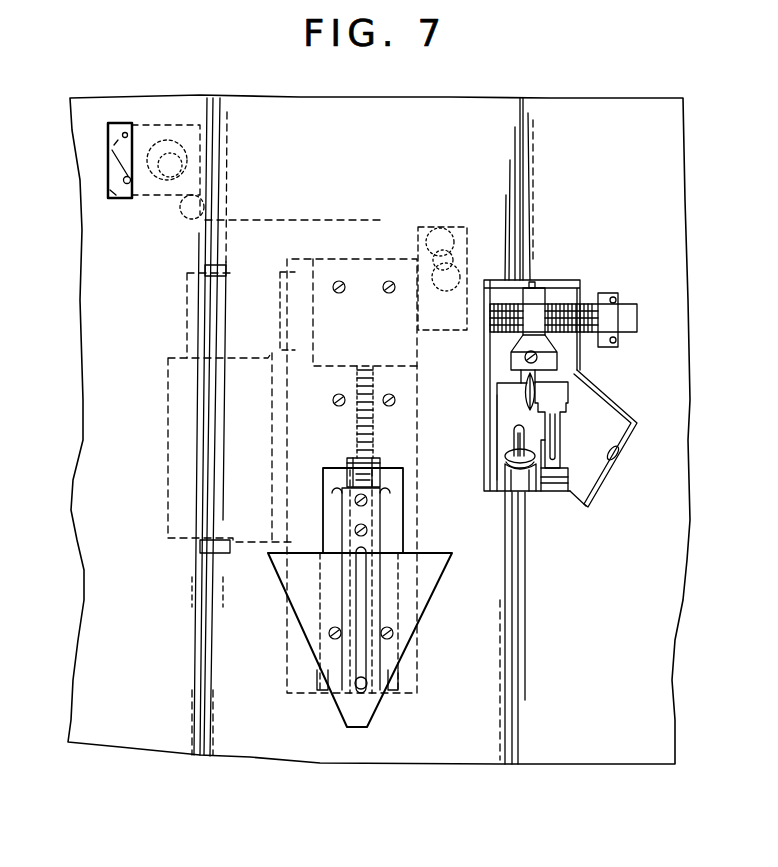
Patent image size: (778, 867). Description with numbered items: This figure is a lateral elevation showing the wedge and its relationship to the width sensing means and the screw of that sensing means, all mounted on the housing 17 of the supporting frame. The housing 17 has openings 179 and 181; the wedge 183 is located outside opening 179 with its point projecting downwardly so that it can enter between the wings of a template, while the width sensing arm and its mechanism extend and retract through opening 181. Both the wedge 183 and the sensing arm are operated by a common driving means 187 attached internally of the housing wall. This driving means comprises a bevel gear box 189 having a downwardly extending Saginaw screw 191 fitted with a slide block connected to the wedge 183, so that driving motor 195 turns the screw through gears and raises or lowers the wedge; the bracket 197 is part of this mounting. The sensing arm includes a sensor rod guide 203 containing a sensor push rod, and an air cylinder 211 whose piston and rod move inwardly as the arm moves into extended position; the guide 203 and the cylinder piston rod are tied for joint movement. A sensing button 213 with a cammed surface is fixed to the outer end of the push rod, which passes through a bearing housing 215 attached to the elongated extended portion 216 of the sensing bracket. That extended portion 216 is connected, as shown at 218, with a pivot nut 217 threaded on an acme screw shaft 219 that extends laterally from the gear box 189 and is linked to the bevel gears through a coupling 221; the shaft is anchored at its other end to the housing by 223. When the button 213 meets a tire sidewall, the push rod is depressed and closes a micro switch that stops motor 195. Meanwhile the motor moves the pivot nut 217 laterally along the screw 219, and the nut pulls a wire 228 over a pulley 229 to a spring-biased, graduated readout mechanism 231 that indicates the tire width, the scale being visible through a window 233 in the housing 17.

The housing 17 is at (420, 760).
The opening 179 is at (358, 458).
The opening 181 is at (615, 452).
The wedge 183 is at (423, 603).
The common driving means 187 is at (178, 312).
The bevel gear box 189 is at (360, 258).
The Saginaw screw 191 is at (356, 481).
The driving motor 195 is at (168, 440).
The bracket 197 is at (313, 330).
The sensor rod guide 203 is at (556, 430).
The air cylinder 211 is at (511, 478).
The sensing button 213 is at (528, 397).
The bearing housing 215 is at (565, 491).
The elongated extended portion 216 is at (500, 421).
The pivot nut 217 is at (538, 300).
The connection of pivot nut to bracket extension 218 is at (546, 357).
The acme screw shaft 219 is at (592, 304).
The coupling 221 is at (432, 345).
The screw anchor 223 is at (620, 298).
The wire 228 is at (508, 288).
The pulley 229 is at (466, 248).
The spring-biased readout mechanism 231 is at (108, 130).
The window 233 is at (112, 194).